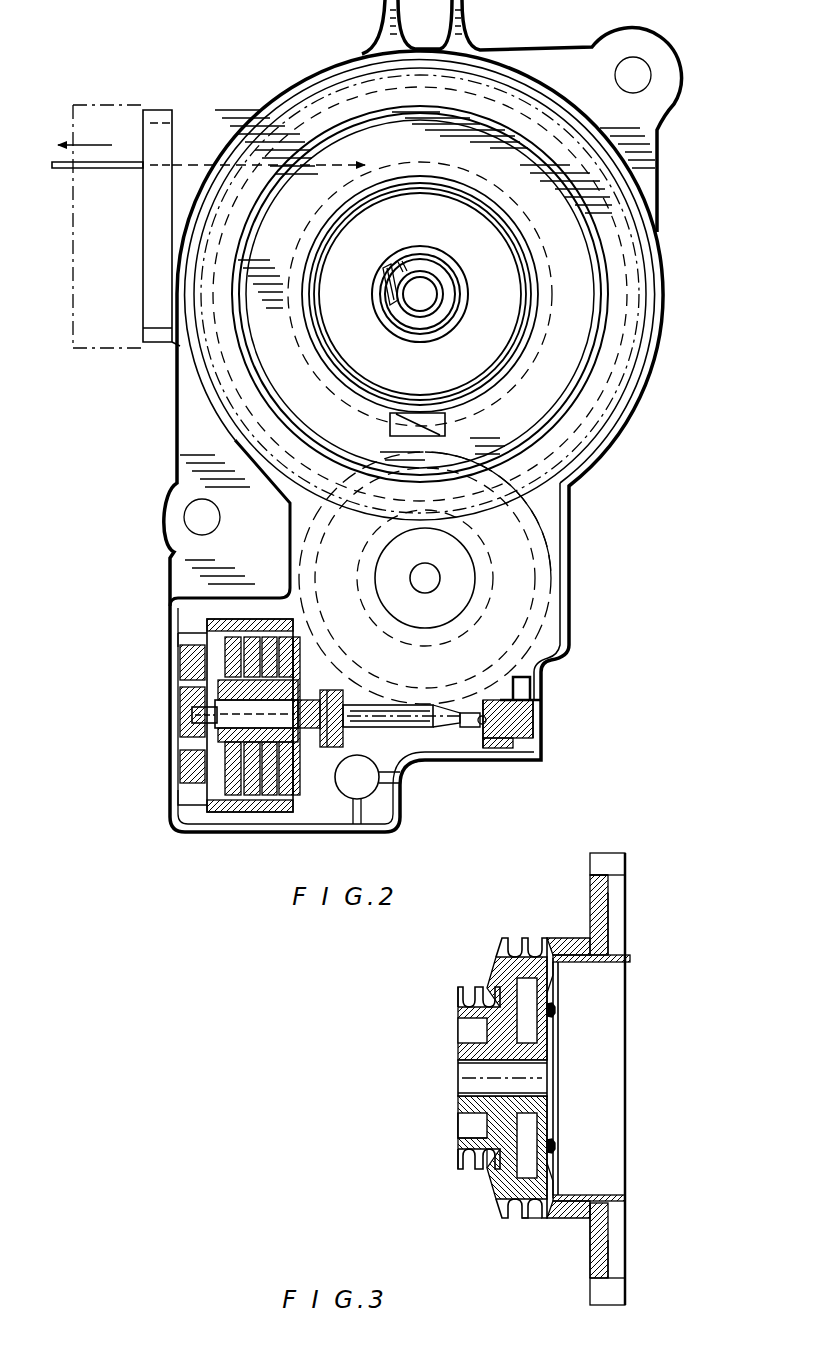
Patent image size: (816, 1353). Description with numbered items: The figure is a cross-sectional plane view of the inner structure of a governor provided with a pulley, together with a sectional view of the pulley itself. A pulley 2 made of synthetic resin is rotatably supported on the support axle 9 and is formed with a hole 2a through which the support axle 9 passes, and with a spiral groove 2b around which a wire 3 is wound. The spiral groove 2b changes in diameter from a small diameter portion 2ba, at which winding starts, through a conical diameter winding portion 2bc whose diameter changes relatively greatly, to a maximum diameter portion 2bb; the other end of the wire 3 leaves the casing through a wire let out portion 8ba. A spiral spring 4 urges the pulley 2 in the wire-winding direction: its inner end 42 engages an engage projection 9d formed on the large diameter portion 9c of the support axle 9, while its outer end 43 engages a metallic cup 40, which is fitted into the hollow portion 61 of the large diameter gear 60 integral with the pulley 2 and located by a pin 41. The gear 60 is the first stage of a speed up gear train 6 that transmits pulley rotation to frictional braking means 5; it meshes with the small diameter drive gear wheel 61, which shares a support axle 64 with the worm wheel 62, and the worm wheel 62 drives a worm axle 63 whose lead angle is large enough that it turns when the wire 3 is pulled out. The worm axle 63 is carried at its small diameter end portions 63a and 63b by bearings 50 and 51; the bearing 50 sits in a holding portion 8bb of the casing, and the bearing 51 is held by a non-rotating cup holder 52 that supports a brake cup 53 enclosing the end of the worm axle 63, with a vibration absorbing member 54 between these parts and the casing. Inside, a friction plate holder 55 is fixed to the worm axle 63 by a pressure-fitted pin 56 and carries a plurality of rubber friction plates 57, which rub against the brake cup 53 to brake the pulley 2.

In FIG. 2, the pulley 2 is at (563, 430).
In FIG. 3, the pulley 2 is at (526, 932).
In FIG. 3, the hole 2a is at (470, 1078).
In FIG. 3, the spiral groove 2b is at (462, 982).
In FIG. 3, the small diameter portion 2ba is at (468, 1162).
In FIG. 3, the maximum diameter portion 2bb is at (530, 1222).
In FIG. 3, the conical diameter winding portion 2bc is at (490, 1176).
In FIG. 2, the wire 3 is at (122, 170).
In FIG. 2, the spiral spring 4 is at (310, 323).
In FIG. 2, the frictional braking means 5 is at (318, 790).
In FIG. 2, the speed up gear train 6 is at (542, 510).
In FIG. 2, the wire let out portion 8ba is at (214, 125).
In FIG. 2, the holding portion 8bb is at (540, 702).
In FIG. 2, the support axle 9 is at (425, 298).
In FIG. 2, the large diameter portion 9c is at (403, 320).
In FIG. 2, the engage projection 9d is at (380, 287).
In FIG. 2, the cup 40 is at (330, 368).
In FIG. 3, the cup 40 is at (632, 965).
In FIG. 3, the pin 41 is at (556, 1011).
In FIG. 2, the inner end 42 is at (407, 264).
In FIG. 2, the outer end 43 is at (425, 414).
In FIG. 2, the bearing 50 is at (535, 725).
In FIG. 2, the bearing 51 is at (185, 737).
In FIG. 2, the cup holder 52 is at (182, 682).
In FIG. 2, the brake cup 53 is at (190, 812).
In FIG. 2, the vibration absorbing member 54 is at (192, 620).
In FIG. 2, the friction plate holder 55 is at (308, 690).
In FIG. 2, the pin 56 is at (335, 692).
In FIG. 2, the friction plates 57 is at (237, 800).
In FIG. 2, the large diameter gear 60 is at (640, 376).
In FIG. 3, the large diameter gear 60 is at (615, 865).
In FIG. 2, the small diameter drive gear wheel 61 is at (467, 615).
In FIG. 3, the small diameter drive gear wheel 61 is at (612, 1198).
In FIG. 2, the worm wheel 62 is at (540, 598).
In FIG. 2, the worm axle 63 is at (412, 742).
In FIG. 2, the small diameter end portion 63a is at (465, 728).
In FIG. 2, the small diameter end portion 63b is at (192, 716).
In FIG. 2, the support axle 64 is at (420, 575).